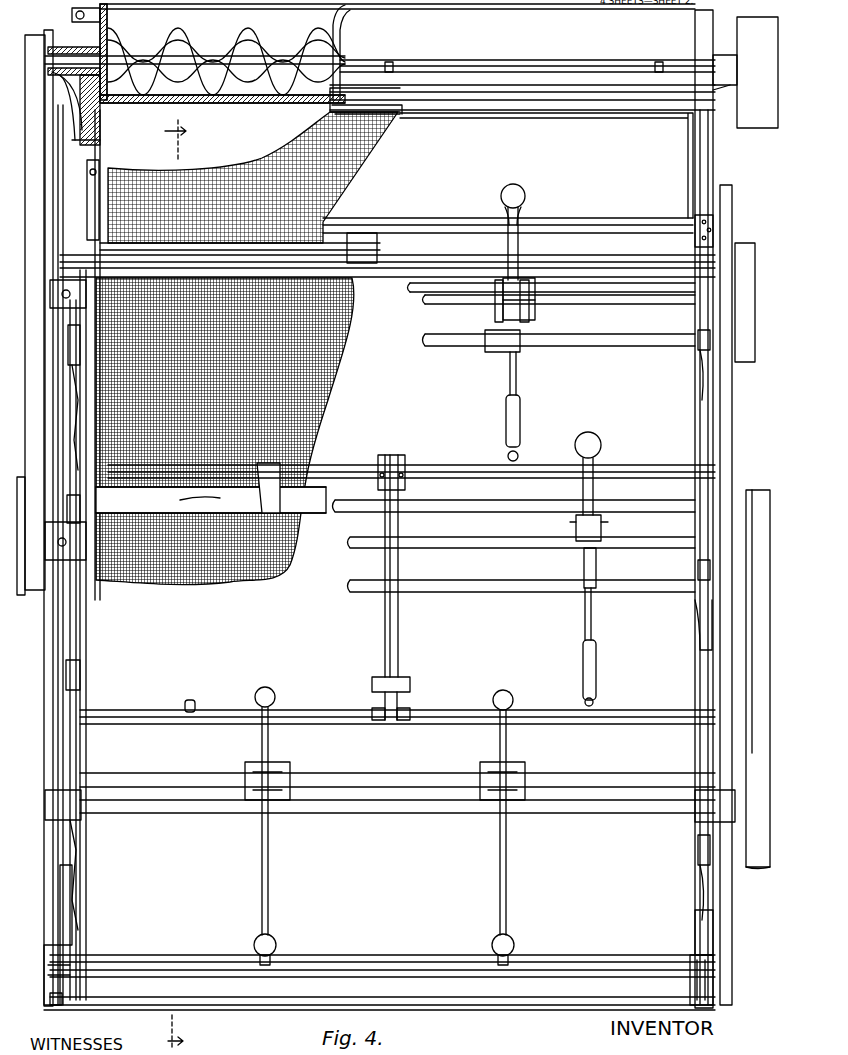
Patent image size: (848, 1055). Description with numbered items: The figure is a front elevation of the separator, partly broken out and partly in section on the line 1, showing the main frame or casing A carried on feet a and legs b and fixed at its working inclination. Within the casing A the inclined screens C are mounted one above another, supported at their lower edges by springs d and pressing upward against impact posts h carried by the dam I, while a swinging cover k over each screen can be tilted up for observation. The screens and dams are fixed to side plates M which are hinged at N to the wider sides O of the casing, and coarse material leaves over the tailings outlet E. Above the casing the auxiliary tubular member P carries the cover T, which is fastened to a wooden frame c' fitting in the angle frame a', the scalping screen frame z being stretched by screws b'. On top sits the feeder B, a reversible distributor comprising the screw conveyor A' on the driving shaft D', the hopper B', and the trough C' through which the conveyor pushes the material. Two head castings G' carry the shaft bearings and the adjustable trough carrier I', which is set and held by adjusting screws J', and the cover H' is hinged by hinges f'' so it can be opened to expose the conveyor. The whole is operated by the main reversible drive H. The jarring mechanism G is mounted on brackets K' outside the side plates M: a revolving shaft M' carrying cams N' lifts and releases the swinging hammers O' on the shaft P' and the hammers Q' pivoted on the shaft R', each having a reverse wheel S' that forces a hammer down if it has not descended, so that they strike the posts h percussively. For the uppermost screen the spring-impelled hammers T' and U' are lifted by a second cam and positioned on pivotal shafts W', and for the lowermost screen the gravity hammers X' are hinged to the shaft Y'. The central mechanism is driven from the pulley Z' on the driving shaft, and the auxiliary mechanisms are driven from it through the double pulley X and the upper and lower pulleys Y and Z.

The main frame A is at (56, 518).
The pulley Z' is at (35, 298).
The adjusting screws J' is at (75, 25).
The hopper B' is at (397, 52).
The driving shaft D' is at (195, 54).
The distributing screw conveyor A' is at (226, 61).
The trough C' is at (250, 94).
The hinges f'' is at (517, 48).
The cover H' is at (527, 44).
The feeder B is at (522, 70).
The main reversible drive H is at (745, 72).
The trough carrier I' is at (91, 107).
The head castings G' is at (65, 106).
The screws b' is at (73, 186).
The section line 1 is at (169, 582).
The feet a is at (224, 572).
The angle frame a' is at (382, 122).
The wooden frame c' is at (381, 139).
The cover T is at (387, 195).
The wooden frame z is at (362, 248).
The auxiliary tubular member P is at (712, 509).
The hinge N is at (682, 220).
The upper pulley Y is at (738, 595).
The hammer T' is at (527, 232).
The cams N' is at (520, 434).
The revolving shaft M' is at (430, 561).
The pivotal shafts W' is at (552, 314).
The hammer U' is at (533, 399).
The impact post h is at (518, 470).
The screens C is at (225, 440).
The springs d is at (211, 488).
The dam I is at (397, 621).
The swinging cover k is at (411, 561).
The shaft P' is at (514, 496).
The swinging hammers O' is at (607, 473).
The reverse wheel S' is at (522, 557).
The shaft R' is at (522, 605).
The jarring mechanism G is at (602, 614).
The swinging hammers Q' is at (604, 673).
The brackets K' is at (682, 642).
The double pulley X is at (758, 663).
The lower pulley Z is at (750, 885).
The gravity hammers X' is at (396, 826).
The shaft Y' is at (407, 785).
The legs b is at (41, 975).
The tailings outlet E is at (382, 978).
The side plates M is at (379, 994).
The wider sides O is at (717, 980).